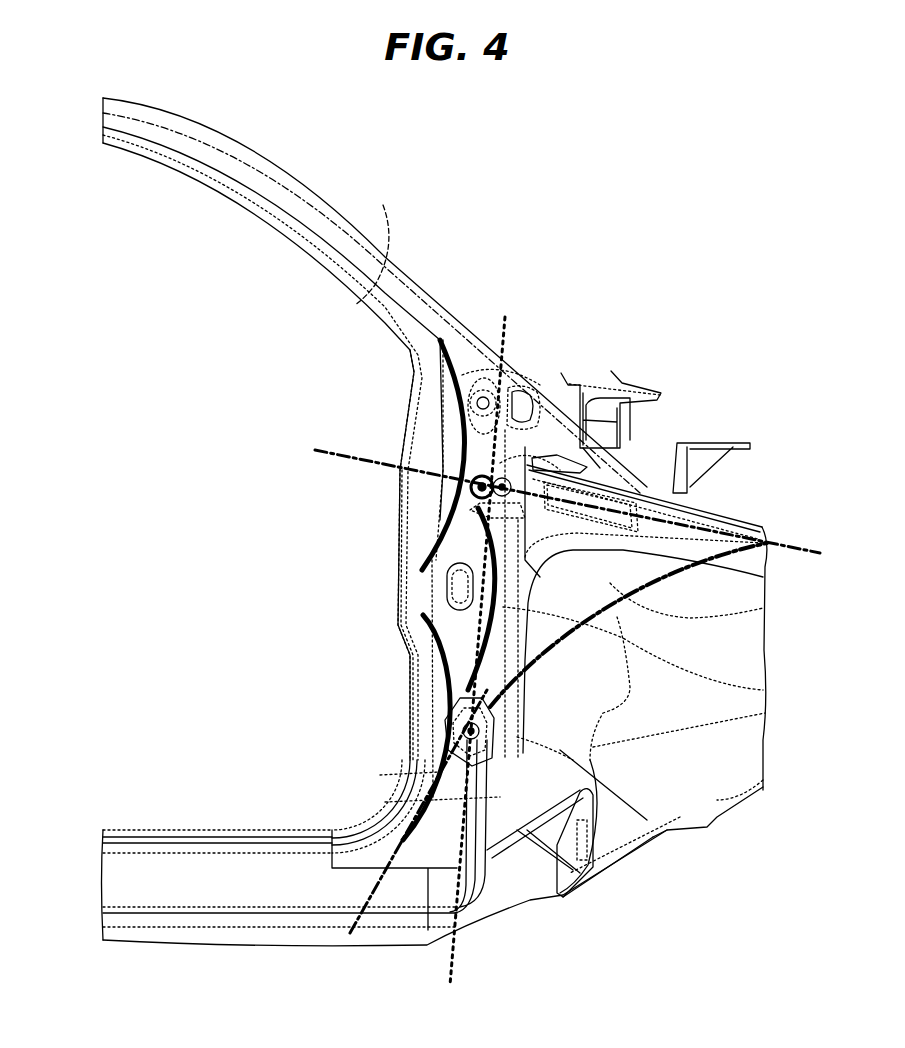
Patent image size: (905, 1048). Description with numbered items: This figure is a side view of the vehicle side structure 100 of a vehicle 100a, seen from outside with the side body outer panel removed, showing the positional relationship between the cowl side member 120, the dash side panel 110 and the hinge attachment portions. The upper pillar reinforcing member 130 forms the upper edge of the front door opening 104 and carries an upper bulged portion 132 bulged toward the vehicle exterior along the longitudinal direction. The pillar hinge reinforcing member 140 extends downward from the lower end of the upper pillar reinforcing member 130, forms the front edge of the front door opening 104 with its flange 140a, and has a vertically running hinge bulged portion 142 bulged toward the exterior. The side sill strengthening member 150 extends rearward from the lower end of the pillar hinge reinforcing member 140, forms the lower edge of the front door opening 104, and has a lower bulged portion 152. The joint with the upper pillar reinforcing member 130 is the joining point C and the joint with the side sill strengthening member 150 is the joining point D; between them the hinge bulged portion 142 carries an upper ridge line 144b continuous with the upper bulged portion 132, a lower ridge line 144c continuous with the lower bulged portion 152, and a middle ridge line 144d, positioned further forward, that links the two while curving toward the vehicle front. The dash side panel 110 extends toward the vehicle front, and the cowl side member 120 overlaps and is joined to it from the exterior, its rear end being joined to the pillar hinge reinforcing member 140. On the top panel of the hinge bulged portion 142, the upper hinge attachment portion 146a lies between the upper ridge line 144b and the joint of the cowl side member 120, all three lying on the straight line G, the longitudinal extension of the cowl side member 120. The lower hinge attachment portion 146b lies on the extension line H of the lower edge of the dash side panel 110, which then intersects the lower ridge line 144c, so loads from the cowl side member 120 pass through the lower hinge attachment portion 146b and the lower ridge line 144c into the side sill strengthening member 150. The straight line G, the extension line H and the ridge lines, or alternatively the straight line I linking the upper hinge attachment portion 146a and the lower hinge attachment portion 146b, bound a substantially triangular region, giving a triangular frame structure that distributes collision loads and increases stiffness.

The vehicle side structure 100 is at (484, 285).
The vehicle 100a is at (573, 180).
The front door opening 104 is at (200, 431).
The dash side panel 110 is at (764, 612).
The cowl side member 120 is at (720, 530).
The upper pillar reinforcing member 130 is at (238, 240).
The upper bulged portion 132 is at (228, 156).
The pillar hinge reinforcing member 140 is at (385, 724).
The flange 140a is at (418, 496).
The hinge bulged portion 142 is at (445, 752).
The upper ridge line 144b is at (458, 360).
The lower ridge line 144c is at (563, 897).
The middle ridge line 144d is at (764, 690).
The upper hinge attachment portion 146a is at (592, 437).
The lower hinge attachment portion 146b is at (677, 840).
The side sill strengthening member 150 is at (150, 962).
The lower bulged portion 152 is at (247, 900).
The joining point C is at (372, 242).
The joining point D is at (330, 862).
The straight line G is at (815, 545).
The extension line H is at (366, 906).
The straight line I is at (507, 345).